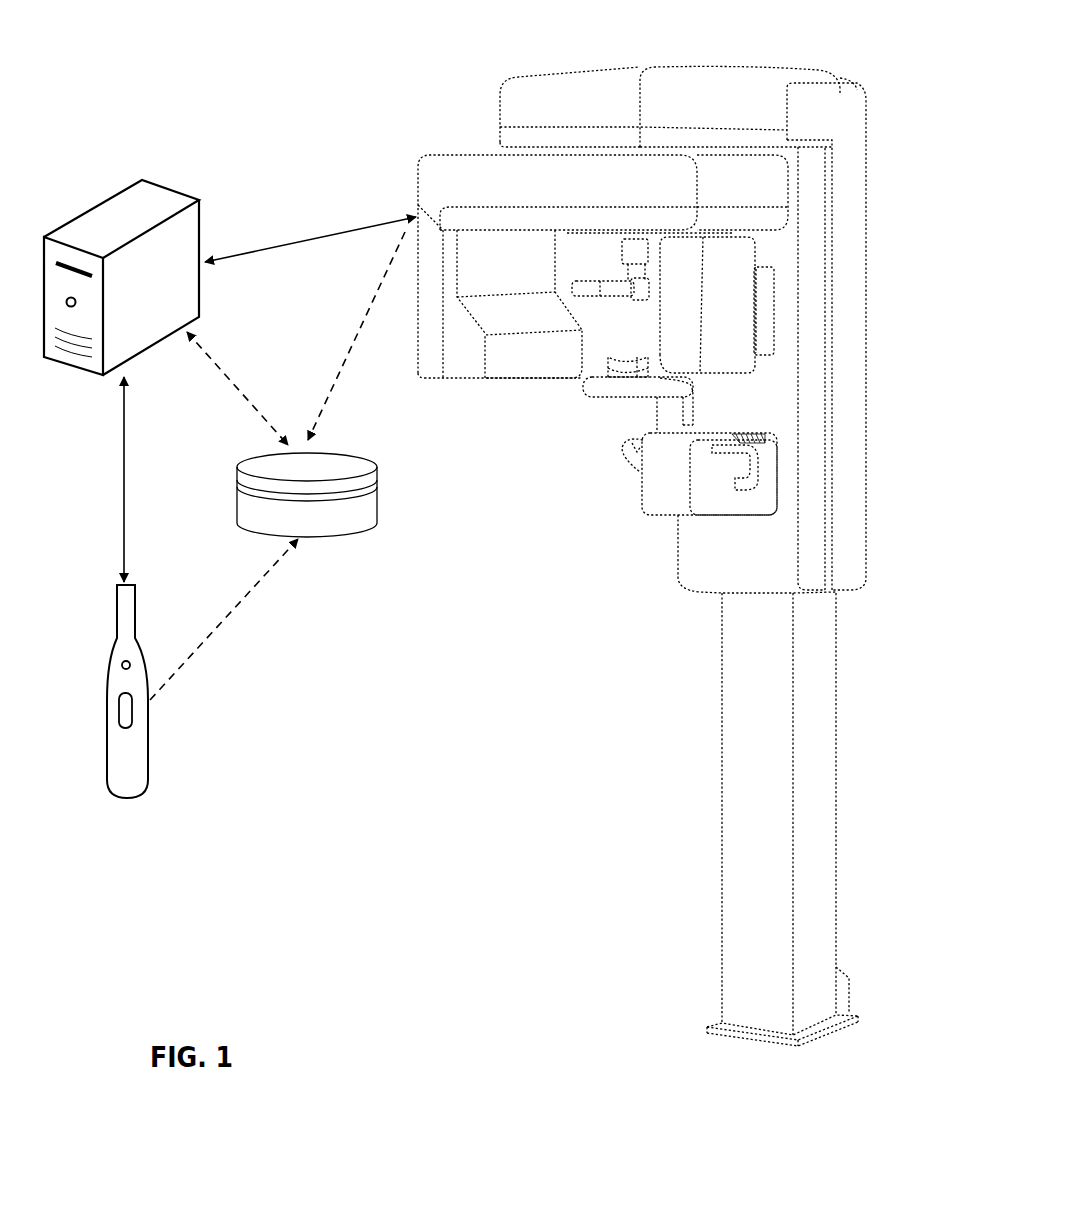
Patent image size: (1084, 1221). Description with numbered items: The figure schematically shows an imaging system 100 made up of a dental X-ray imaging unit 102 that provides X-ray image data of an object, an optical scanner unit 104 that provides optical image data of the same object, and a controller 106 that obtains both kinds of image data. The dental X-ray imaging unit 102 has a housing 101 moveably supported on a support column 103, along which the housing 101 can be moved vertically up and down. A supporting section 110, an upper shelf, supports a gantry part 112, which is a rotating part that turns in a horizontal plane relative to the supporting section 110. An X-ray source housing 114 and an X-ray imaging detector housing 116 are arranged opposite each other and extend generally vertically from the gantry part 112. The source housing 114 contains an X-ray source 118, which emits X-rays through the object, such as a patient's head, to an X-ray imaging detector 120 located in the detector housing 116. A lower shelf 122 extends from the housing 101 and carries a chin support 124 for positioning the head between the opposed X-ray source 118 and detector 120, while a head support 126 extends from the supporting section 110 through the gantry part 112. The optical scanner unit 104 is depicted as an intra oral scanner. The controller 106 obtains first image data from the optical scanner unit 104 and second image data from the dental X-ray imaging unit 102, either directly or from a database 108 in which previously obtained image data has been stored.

The imaging system 100 is at (108, 30).
The housing 101 is at (700, 584).
The dental X-ray imaging unit 102 is at (462, 45).
The support column 103 is at (817, 822).
The optical scanner unit 104 is at (145, 768).
The controller 106 is at (163, 190).
The database 108 is at (335, 535).
The supporting section 110 is at (800, 66).
The gantry part 112 is at (430, 160).
The X-ray source housing 114 is at (430, 330).
The X-ray imaging detector housing 116 is at (717, 302).
The X-ray source 118 is at (515, 351).
The X-ray imaging detector 120 is at (665, 337).
The lower shelf 122 is at (648, 508).
The chin support 124 is at (617, 393).
The head support 126 is at (612, 282).